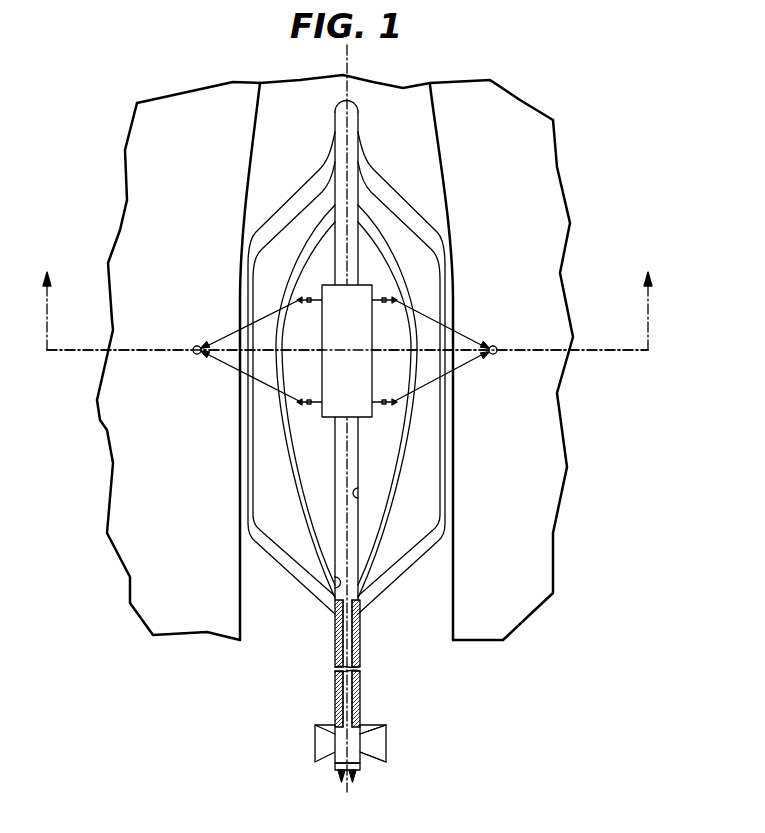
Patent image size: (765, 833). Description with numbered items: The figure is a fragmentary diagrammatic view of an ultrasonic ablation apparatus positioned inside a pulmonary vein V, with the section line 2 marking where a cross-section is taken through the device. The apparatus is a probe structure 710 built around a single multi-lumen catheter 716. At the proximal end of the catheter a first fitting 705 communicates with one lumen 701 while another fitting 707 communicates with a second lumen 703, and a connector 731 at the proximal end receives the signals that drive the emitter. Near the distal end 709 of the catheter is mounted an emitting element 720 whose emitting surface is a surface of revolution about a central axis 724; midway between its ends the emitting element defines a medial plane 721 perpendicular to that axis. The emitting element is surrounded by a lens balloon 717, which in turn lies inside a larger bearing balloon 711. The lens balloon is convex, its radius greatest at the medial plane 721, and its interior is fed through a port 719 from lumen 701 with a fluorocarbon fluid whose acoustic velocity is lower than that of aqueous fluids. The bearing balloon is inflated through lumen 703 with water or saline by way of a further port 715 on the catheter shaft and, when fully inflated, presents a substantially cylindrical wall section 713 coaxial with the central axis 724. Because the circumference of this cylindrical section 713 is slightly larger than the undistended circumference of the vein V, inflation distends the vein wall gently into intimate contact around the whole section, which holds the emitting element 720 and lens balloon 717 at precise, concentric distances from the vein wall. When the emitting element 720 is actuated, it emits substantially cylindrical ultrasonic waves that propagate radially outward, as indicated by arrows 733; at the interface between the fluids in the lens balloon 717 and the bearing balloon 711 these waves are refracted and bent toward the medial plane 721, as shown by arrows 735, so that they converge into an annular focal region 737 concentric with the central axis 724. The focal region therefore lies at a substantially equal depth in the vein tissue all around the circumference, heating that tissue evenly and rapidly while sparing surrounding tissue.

The section line 2- 2 is at (347, 386).
The pulmonary vein V is at (448, 192).
The bearing balloon 711 is at (453, 508).
The cylindrical wall section 713 is at (453, 440).
The distal end of the catheter 709 is at (344, 346).
The central axis 724 is at (335, 120).
The arrows indicating ultrasonic waves 733 is at (302, 296).
The emitting element 720 is at (373, 341).
The arrows indicating refracted waves 735 is at (233, 324).
The lens balloon 717 is at (418, 357).
The annular focal region 737 is at (194, 353).
The medial plane 721 is at (147, 350).
The port 719 is at (362, 493).
The lower rod portion 715 is at (335, 583).
The probe structure 710 is at (331, 658).
The lumen 703 is at (340, 654).
The lumen 701 is at (364, 657).
The multi-lumen catheter 716 is at (364, 664).
The fitting 707 is at (317, 752).
The first fitting 705 is at (380, 748).
The connector 731 is at (357, 772).